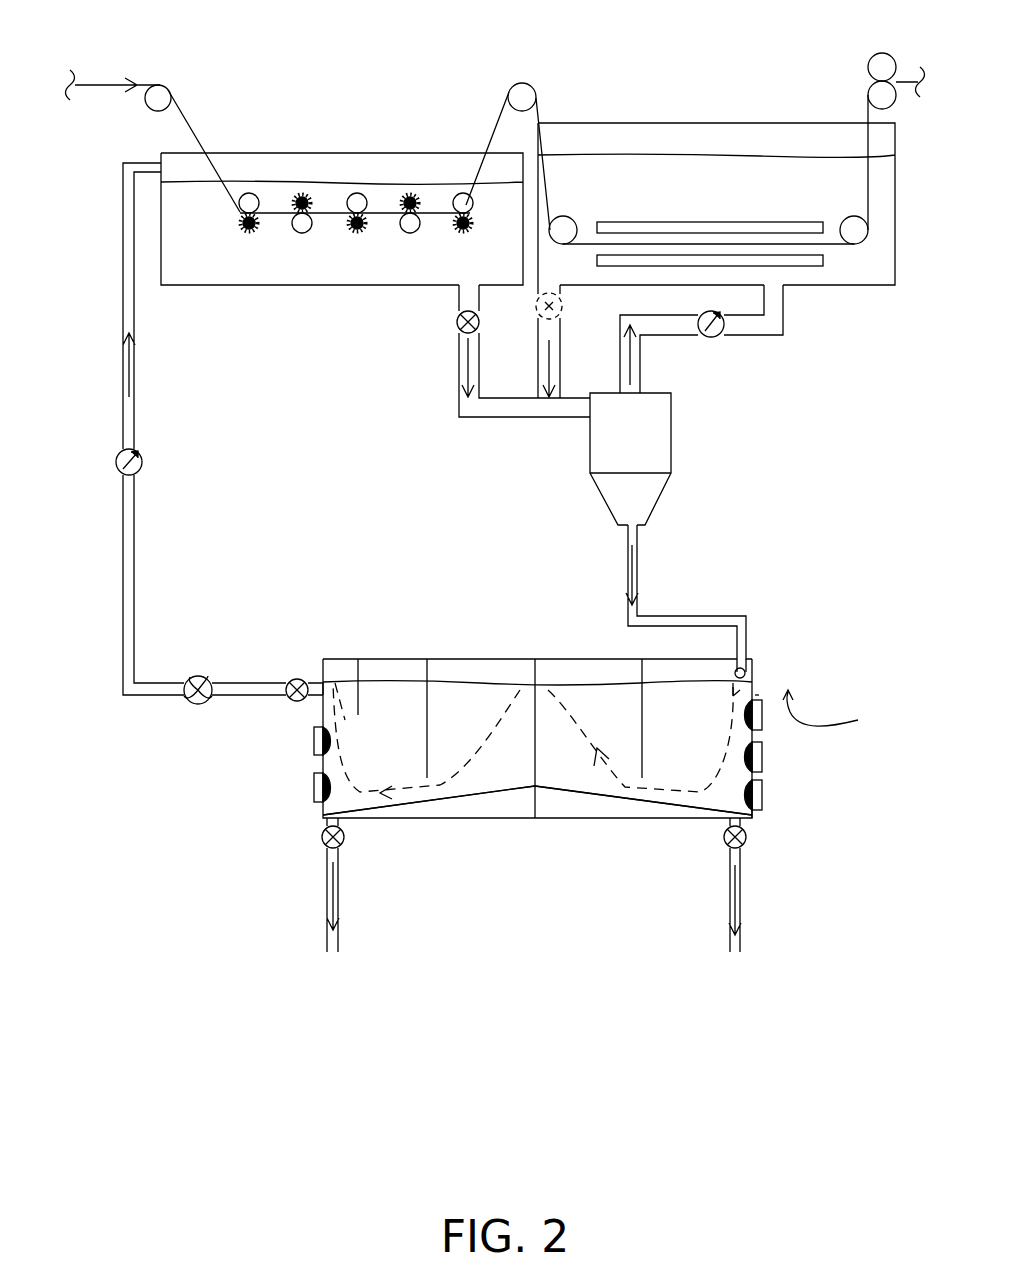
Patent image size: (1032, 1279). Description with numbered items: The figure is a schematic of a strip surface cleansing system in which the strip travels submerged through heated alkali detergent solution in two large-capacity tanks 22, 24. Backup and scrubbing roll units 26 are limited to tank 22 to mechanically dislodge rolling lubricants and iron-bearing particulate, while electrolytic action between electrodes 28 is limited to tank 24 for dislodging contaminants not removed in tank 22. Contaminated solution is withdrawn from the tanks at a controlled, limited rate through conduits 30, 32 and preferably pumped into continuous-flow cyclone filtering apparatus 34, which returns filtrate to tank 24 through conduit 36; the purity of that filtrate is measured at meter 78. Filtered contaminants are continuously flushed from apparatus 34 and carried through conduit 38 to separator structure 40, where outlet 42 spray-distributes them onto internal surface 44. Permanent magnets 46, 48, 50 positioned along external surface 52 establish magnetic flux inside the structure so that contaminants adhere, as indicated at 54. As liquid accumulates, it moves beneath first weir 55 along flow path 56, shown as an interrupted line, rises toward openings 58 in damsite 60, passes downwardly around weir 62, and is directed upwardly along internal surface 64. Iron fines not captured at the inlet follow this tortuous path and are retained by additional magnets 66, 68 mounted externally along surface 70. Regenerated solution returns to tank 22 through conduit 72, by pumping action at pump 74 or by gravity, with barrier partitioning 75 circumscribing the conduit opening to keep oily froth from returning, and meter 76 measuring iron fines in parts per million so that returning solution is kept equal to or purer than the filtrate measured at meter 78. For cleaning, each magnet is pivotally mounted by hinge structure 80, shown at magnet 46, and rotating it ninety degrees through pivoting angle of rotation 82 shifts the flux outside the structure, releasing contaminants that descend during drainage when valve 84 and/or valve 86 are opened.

The cleansing solution tank 22 is at (303, 120).
The large-capacity tank 24 is at (659, 108).
The backup and scrubbing roll units 26 is at (381, 172).
The electrodes 28 is at (721, 200).
The conduit 30 is at (459, 388).
The conduit 32 is at (540, 358).
The continuous-flow filtering apparatus 34 is at (671, 440).
The conduit 36 is at (783, 320).
The conduit 38 is at (637, 580).
The separator structure 40 is at (478, 639).
The outlet 42 is at (734, 675).
The internal surface 44 is at (740, 693).
The magnet 46 is at (762, 728).
The magnet 48 is at (762, 756).
The magnet 50 is at (762, 791).
The external surface 52 is at (755, 670).
The adhered contaminants 54 is at (740, 783).
The first weir 55 is at (642, 738).
The flow path 56 is at (617, 773).
The opening 58 is at (533, 682).
The damsite 60 is at (533, 758).
The weir 62 is at (427, 731).
The internal surface 64 is at (356, 708).
The magnet 66 is at (314, 741).
The magnet 68 is at (314, 786).
The surface 70 is at (322, 700).
The conduit 72 is at (279, 682).
The pump 74 is at (197, 676).
The barrier partitioning 75 is at (363, 689).
The meter 76 is at (118, 458).
The meter 78 is at (712, 337).
The hinge structure 80 is at (758, 700).
The pivoting angle of rotation 82 is at (834, 710).
The valve 84 is at (746, 837).
The valve 86 is at (345, 837).